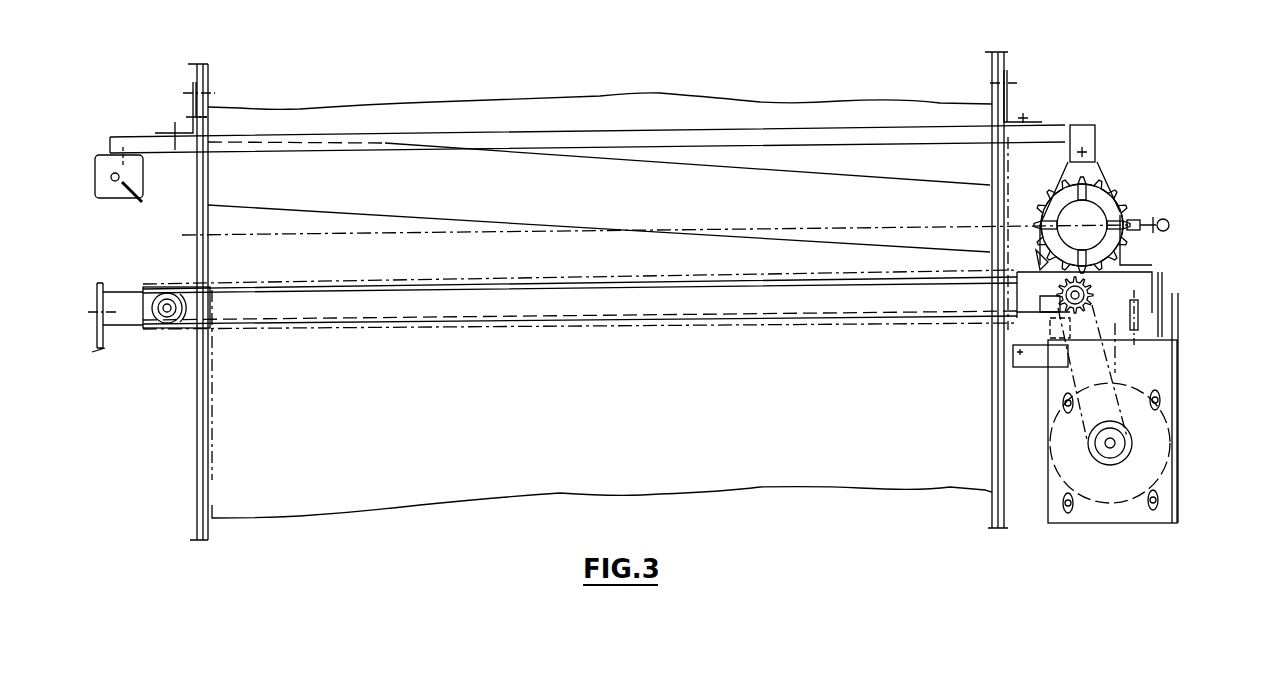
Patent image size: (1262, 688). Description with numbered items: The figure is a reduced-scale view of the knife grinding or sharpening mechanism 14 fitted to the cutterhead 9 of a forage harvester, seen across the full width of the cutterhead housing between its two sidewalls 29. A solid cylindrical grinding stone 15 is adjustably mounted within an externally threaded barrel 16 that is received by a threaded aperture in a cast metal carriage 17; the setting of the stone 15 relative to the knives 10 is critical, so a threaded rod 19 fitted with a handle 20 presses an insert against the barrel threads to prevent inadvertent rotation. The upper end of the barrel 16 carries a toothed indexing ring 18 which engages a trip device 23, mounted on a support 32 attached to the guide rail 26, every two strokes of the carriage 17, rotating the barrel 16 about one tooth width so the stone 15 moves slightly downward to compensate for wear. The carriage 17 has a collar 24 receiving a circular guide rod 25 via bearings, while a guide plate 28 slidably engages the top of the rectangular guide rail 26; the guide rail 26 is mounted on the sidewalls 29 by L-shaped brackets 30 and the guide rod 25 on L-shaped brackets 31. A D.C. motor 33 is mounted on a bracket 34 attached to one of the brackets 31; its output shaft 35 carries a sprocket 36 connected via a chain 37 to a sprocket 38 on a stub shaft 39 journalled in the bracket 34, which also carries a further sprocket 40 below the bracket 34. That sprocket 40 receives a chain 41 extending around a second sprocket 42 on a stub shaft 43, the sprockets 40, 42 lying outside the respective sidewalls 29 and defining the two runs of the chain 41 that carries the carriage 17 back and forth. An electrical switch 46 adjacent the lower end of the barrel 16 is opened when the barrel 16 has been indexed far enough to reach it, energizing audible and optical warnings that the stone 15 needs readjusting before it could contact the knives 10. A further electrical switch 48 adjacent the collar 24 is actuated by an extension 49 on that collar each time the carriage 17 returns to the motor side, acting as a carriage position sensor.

The cutterhead 9 is at (560, 115).
The knives 10 is at (477, 172).
The knife grinding or sharpening mechanism 14 is at (1155, 185).
The grinding stone 15 is at (1127, 203).
The barrel 16 is at (1107, 207).
The carriage 17 is at (1117, 263).
The toothed indexing ring 18 is at (1134, 220).
The threaded rod 19 is at (1153, 220).
The handle 20 is at (1170, 226).
The trip device 23 is at (125, 200).
The collar 24 is at (1137, 270).
The guide rod 25 is at (637, 308).
The guide rail 26 is at (176, 155).
The guide plate 28 is at (1093, 137).
The sidewalls 29 is at (197, 423).
The L-shaped brackets 30 is at (192, 100).
The L-shaped brackets 31 is at (95, 345).
The support 32 is at (567, 138).
The D.C. motor 33 is at (1175, 447).
The bracket 34 is at (1180, 387).
The output shaft 35 is at (1105, 449).
The sprocket 36 is at (1118, 457).
The chain 37 is at (1116, 373).
The sprocket 38 is at (1057, 303).
The stub shaft 39 is at (1157, 305).
The sprocket 40 is at (1057, 303).
The chain 41 is at (433, 327).
The second sprocket 42 is at (155, 330).
The stub shaft 43 is at (168, 300).
The electrical switch 46 is at (1043, 257).
The electrical switch 48 is at (1033, 368).
The extension 49 is at (1098, 302).